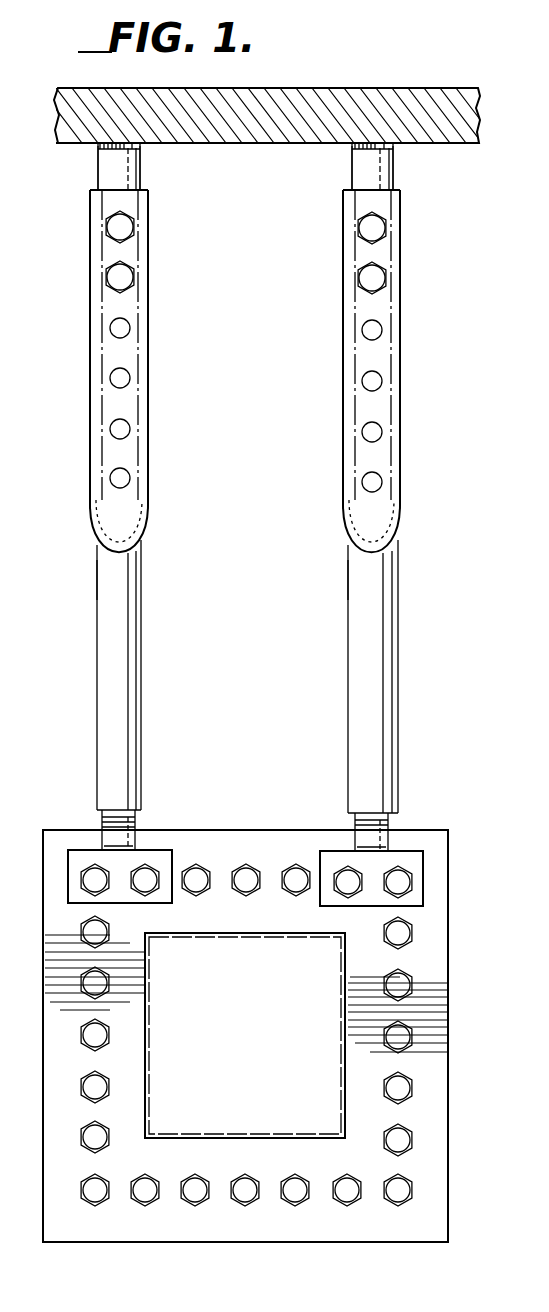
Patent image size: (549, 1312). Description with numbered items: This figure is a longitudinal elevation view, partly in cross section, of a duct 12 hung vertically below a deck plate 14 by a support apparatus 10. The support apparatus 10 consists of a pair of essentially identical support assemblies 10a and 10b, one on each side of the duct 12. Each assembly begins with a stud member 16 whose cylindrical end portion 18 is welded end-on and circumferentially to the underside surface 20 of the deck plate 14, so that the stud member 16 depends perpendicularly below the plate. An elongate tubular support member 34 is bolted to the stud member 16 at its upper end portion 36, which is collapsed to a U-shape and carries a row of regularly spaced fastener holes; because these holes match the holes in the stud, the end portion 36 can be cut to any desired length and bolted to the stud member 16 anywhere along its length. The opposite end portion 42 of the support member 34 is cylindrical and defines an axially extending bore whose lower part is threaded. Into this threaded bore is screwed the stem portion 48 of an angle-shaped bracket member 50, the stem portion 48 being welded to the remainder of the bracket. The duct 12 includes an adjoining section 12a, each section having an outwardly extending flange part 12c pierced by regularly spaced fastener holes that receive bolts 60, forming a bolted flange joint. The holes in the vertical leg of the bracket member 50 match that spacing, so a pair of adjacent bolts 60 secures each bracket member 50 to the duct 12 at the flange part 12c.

The support apparatus 10 is at (458, 331).
The support assembly 10a is at (410, 586).
The support assembly 10b is at (192, 562).
The duct 12 is at (250, 1034).
The duct section 12a is at (243, 1138).
The flange part 12c is at (440, 1058).
The deck plate 14 is at (478, 143).
The stud member 16 is at (145, 166).
The cylindrical end portion 18 is at (97, 161).
The underside surface 20 is at (228, 143).
The tubular support member 34 is at (150, 533).
The end portion 36 is at (148, 362).
The opposite end portion 42 is at (142, 660).
The stem portion 48 is at (101, 834).
The bracket member 50 is at (158, 848).
The bolts 60 is at (410, 988).